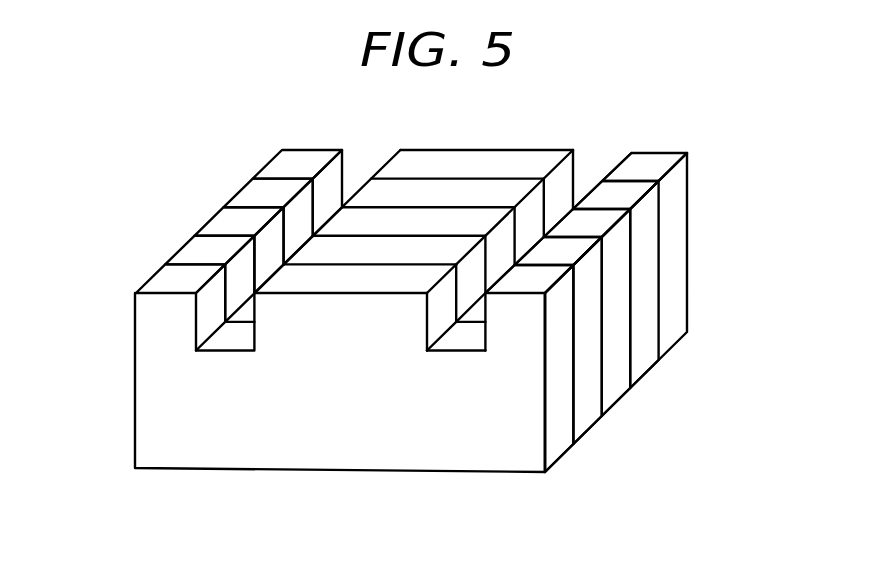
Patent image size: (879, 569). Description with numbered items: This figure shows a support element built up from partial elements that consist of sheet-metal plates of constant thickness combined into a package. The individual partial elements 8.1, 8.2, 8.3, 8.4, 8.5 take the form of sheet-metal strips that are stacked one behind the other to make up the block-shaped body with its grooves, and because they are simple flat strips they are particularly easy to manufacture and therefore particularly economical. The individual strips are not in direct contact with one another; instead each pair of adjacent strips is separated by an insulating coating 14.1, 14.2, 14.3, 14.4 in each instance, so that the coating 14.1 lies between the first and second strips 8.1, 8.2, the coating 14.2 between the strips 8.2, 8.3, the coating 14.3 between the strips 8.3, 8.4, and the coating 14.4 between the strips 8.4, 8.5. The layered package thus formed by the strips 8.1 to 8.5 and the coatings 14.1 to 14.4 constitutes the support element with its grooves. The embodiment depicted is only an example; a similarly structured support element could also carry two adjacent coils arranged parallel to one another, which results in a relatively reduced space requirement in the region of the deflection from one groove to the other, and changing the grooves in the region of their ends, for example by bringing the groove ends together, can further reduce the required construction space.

The partial element 8.1 is at (180, 279).
The partial element 8.2 is at (208, 247).
The partial element 8.3 is at (243, 218).
The partial element 8.4 is at (268, 193).
The partial element 8.5 is at (303, 162).
The insulating coating 14.1 is at (572, 390).
The insulating coating 14.2 is at (602, 360).
The insulating coating 14.3 is at (628, 332).
The insulating coating 14.4 is at (658, 300).